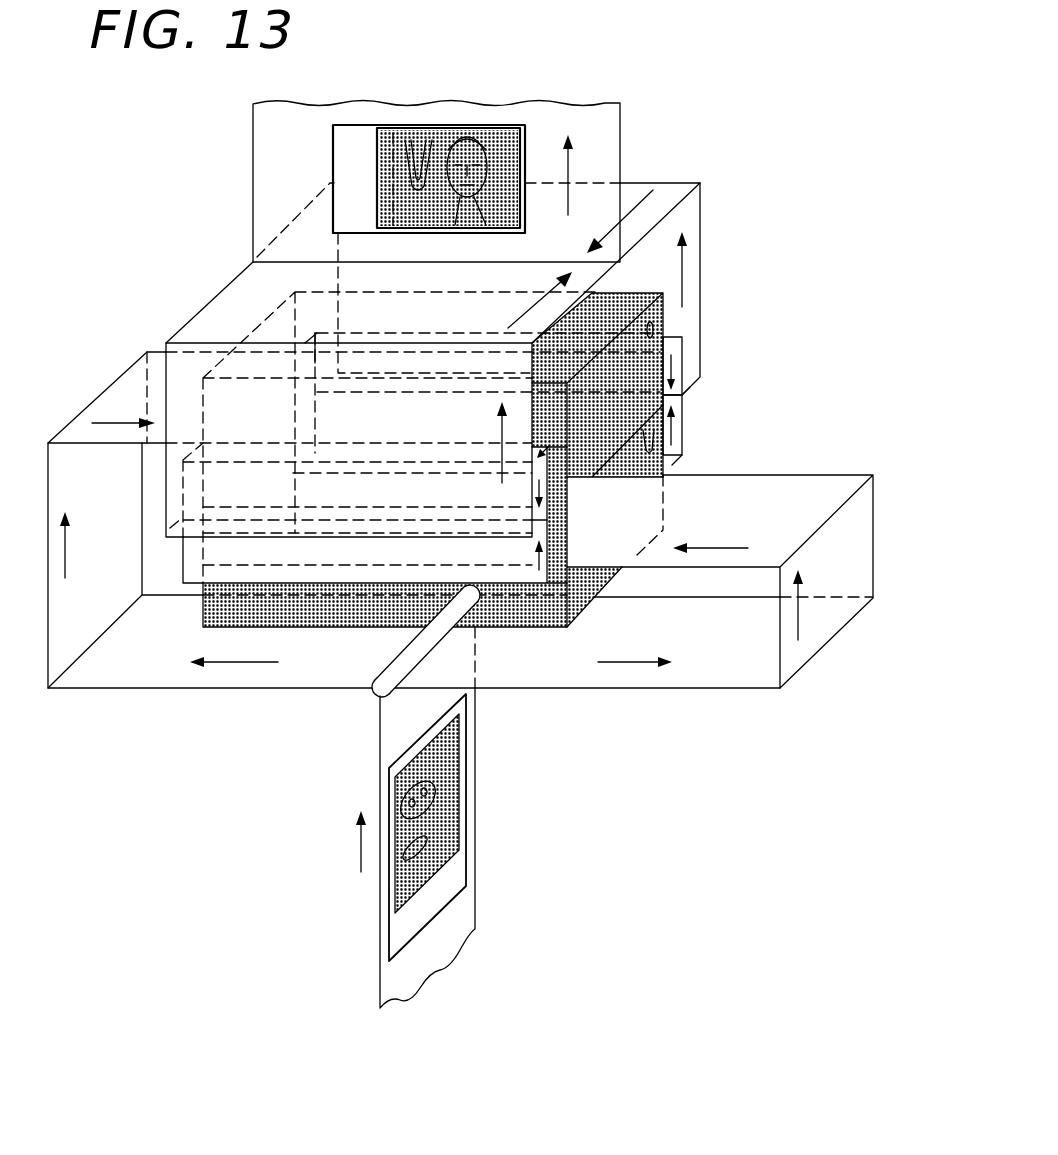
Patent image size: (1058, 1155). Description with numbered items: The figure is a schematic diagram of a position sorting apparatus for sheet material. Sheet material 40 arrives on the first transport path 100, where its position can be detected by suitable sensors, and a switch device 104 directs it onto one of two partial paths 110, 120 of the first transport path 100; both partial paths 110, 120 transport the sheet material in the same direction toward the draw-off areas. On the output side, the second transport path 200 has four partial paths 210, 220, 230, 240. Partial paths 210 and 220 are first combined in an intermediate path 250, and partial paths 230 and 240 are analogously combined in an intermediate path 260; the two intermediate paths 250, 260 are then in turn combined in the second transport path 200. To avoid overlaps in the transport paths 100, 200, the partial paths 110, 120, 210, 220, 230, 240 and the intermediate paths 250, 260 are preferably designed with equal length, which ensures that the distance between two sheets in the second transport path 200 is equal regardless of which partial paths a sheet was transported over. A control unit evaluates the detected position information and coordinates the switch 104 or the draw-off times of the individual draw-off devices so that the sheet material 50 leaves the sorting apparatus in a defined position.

The sheet material 40 is at (445, 786).
The sheet material 50 is at (345, 183).
The first transport path 100 is at (458, 913).
The switch device 104 is at (373, 692).
The partial path 110 is at (152, 667).
The partial path 120 is at (745, 662).
The second transport path 200 is at (602, 128).
The partial path 210 is at (677, 365).
The partial path 220 is at (675, 450).
The partial path 230 is at (542, 515).
The partial path 240 is at (505, 573).
The intermediate path 250 is at (692, 278).
The intermediate path 260 is at (237, 285).